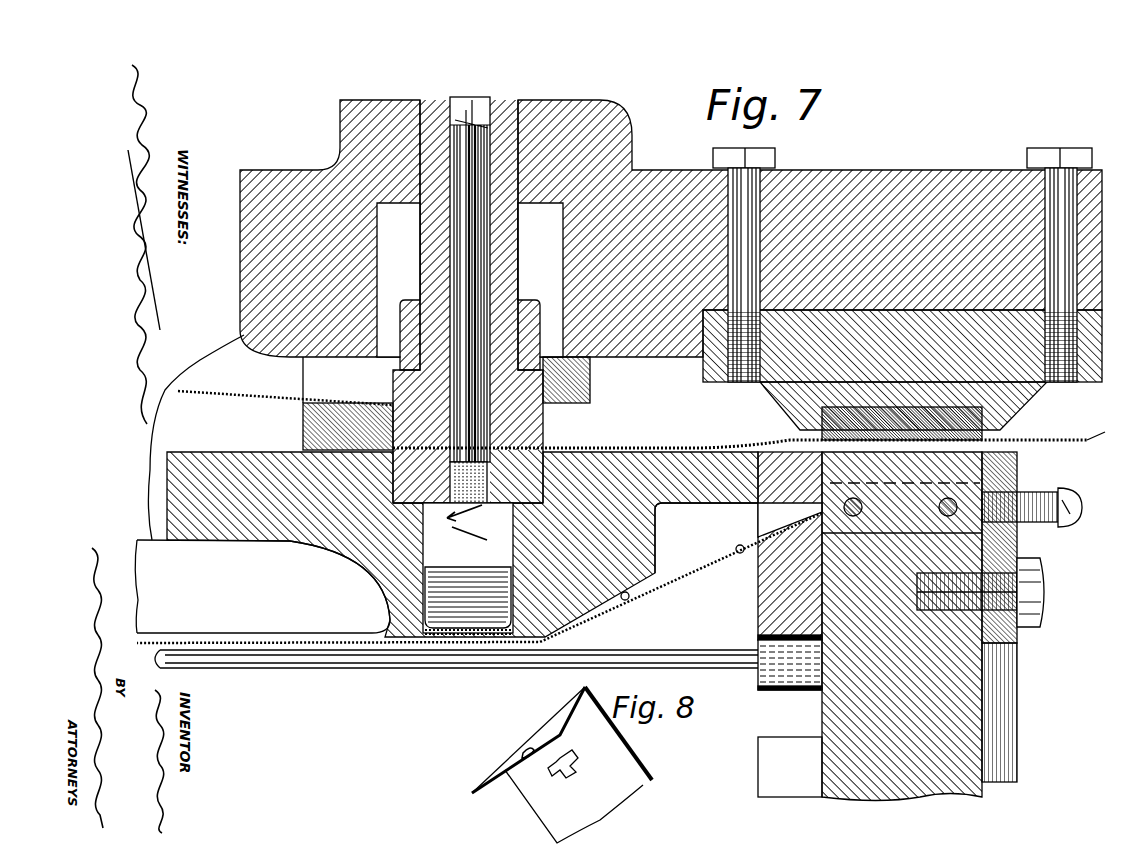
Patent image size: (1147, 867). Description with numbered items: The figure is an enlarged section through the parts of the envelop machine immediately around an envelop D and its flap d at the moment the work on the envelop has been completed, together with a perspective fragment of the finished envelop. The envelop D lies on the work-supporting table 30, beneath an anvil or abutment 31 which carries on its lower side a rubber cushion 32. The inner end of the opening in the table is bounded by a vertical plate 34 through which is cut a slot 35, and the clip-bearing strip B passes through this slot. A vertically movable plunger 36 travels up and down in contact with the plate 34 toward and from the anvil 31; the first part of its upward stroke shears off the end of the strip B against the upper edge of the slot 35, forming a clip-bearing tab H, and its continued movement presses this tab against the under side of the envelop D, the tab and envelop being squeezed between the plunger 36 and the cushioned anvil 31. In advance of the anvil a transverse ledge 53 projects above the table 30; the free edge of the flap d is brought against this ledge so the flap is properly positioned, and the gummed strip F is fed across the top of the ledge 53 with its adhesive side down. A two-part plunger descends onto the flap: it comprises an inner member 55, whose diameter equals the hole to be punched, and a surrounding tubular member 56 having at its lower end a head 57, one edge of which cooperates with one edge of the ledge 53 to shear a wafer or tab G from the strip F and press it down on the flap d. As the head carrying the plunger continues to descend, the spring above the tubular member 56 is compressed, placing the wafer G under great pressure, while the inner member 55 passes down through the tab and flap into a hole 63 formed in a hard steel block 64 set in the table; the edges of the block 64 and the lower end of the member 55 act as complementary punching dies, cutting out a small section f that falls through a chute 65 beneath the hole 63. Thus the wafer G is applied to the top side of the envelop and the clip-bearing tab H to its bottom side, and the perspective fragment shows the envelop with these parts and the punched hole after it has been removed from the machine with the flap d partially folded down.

In FIG. 7, the table 30 is at (790, 440).
In FIG. 7, the anvil or abutment 31 is at (1010, 397).
In FIG. 7, the cushion 32 is at (985, 427).
In FIG. 7, the vertical plate 34 is at (772, 600).
In FIG. 7, the slot 35 is at (770, 513).
In FIG. 7, the plunger 36 is at (945, 670).
In FIG. 7, the transverse ledge 53 is at (303, 430).
In FIG. 7, the inner plunger member 55 is at (478, 257).
In FIG. 7, the tubular plunger member 56 is at (420, 247).
In FIG. 7, the head or enlargement 57 is at (545, 420).
In FIG. 7, the hole 63 is at (445, 485).
In FIG. 7, the hard steel block 64 is at (538, 470).
In FIG. 7, the chute 65 is at (430, 632).
In FIG. 7, the strip B is at (684, 576).
In FIG. 7, the loop C is at (740, 553).
In FIG. 7, the envelop D is at (1107, 426).
In FIG. 8, the envelop D is at (632, 766).
In FIG. 7, the strip F is at (228, 392).
In FIG. 7, the wafer or tab G is at (423, 447).
In FIG. 8, the wafer or tab G is at (520, 755).
In FIG. 7, the clip-bearing tab H is at (1018, 458).
In FIG. 8, the clip-bearing tab H is at (580, 768).
In FIG. 7, the flap d is at (630, 447).
In FIG. 8, the flap d is at (480, 775).
In FIG. 7, the small section f is at (472, 523).
In FIG. 8, the lug a is at (580, 758).